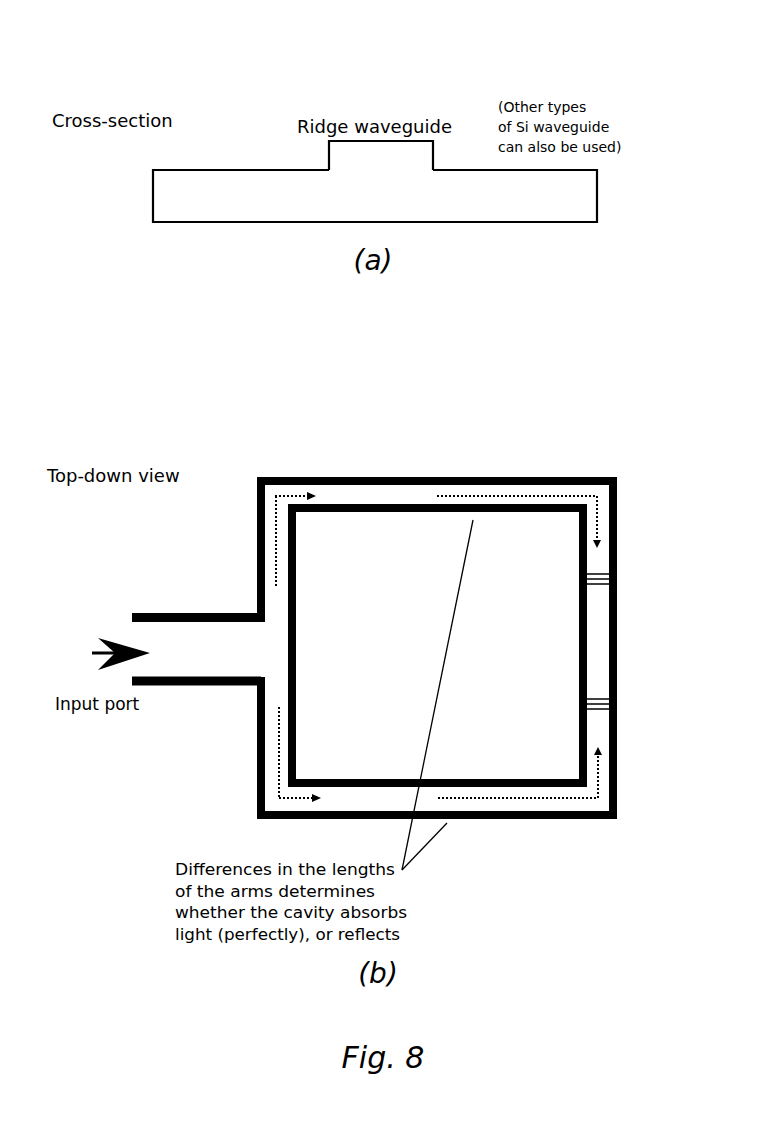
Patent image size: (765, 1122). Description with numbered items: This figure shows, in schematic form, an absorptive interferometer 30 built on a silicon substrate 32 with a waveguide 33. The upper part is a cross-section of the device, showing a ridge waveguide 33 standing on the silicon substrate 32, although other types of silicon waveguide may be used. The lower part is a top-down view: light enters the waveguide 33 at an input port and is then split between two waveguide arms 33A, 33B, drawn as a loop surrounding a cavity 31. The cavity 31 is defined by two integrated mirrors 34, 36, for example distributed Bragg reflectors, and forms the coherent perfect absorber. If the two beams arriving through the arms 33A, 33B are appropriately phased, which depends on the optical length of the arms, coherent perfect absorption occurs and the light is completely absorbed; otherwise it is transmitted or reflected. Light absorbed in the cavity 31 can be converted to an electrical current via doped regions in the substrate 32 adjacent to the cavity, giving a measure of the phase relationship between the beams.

The absorptive interferometer 30 is at (494, 84).
The cavity 31 is at (603, 645).
The silicon substrate 32 is at (233, 185).
The waveguide 33 is at (360, 155).
The first waveguide arm 33A is at (389, 492).
The second waveguide arm 33B is at (500, 807).
The integrated mirror 34 is at (613, 577).
The integrated mirror 36 is at (613, 703).